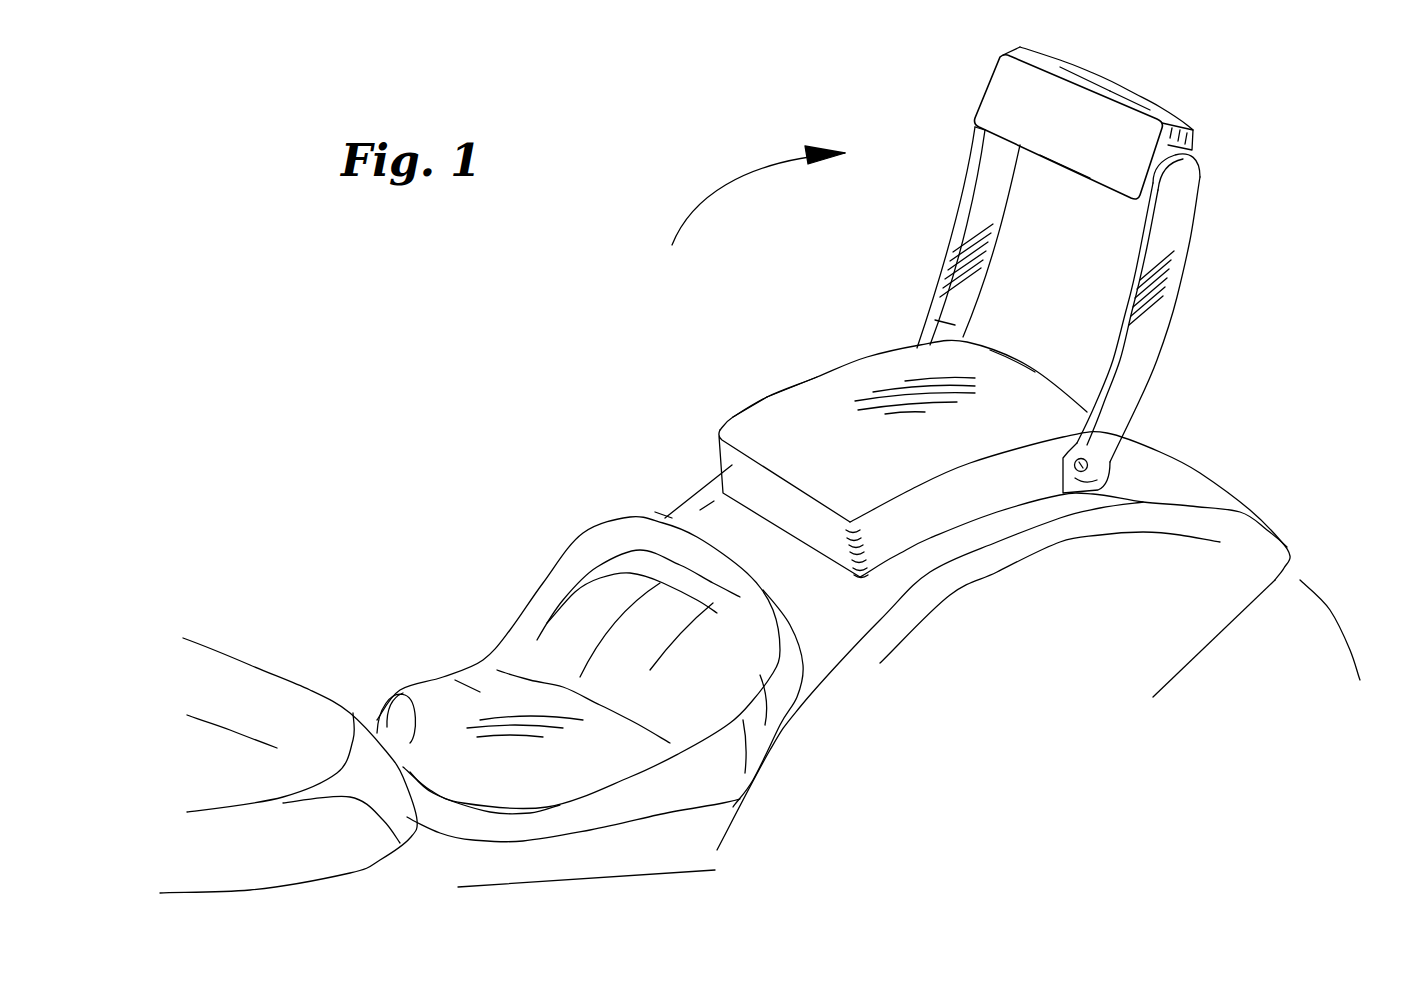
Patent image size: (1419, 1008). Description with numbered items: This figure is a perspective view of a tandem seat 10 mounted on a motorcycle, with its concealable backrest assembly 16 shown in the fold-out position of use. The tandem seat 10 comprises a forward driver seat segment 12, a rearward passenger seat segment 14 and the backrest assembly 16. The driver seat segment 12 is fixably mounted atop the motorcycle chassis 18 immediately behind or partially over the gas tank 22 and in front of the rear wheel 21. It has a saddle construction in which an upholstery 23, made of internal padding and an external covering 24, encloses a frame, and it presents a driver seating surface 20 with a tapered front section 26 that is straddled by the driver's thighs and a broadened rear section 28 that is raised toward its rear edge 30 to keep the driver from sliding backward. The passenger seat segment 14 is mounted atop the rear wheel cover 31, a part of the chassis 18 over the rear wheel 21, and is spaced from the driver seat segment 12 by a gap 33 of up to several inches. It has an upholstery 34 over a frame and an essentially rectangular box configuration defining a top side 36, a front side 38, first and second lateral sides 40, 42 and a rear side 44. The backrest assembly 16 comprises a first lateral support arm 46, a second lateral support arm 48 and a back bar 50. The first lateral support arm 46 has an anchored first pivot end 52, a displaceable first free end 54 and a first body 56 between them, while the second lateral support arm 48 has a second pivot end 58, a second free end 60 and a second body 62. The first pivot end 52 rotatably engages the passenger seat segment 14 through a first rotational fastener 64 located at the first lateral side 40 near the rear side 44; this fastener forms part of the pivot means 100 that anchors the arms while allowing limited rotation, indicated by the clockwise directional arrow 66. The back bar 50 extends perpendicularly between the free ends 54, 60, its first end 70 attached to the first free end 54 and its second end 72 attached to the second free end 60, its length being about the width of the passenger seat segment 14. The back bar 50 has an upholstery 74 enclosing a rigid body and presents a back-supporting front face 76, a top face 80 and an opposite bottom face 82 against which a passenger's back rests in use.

The tandem seat 10 is at (617, 268).
The forward driver seat segment 12 is at (540, 617).
The rearward passenger seat segment 14 is at (843, 392).
The concealable backrest assembly 16 is at (973, 180).
The motorcycle chassis 18 is at (677, 850).
The driver seating surface 20 is at (637, 688).
The rear wheel 21 is at (1300, 605).
The gas tank 22 is at (208, 673).
The upholstery 23 is at (740, 678).
The external covering 24 is at (470, 687).
The tapered front section 26 is at (397, 693).
The broadened rear section 28 is at (570, 567).
The rear edge 30 is at (670, 520).
The rear wheel cover 31 is at (1213, 497).
The gap 33 is at (707, 504).
The upholstery 34 is at (778, 412).
The top side 36 is at (868, 458).
The front side 38 is at (732, 466).
The first lateral side 40 is at (923, 517).
The second lateral side 42 is at (895, 345).
The rear side 44 is at (1033, 367).
The first lateral support arm 46 is at (1147, 342).
The second lateral support arm 48 is at (972, 243).
The back bar 50 is at (1140, 130).
The first pivot end 52 is at (1100, 480).
The first free end 54 is at (1182, 183).
The first body 56 is at (1170, 263).
The second pivot end 58 is at (953, 325).
The second free end 60 is at (977, 147).
The second body 62 is at (990, 218).
The first rotational fastener 64 is at (1090, 467).
The clockwise directional arrow 66 is at (697, 202).
The first end 70 is at (1193, 147).
The second end 72 is at (1003, 60).
The upholstery 74 is at (1090, 78).
The back-supporting front face 76 is at (1077, 137).
The top face 80 is at (1121, 90).
The bottom face 82 is at (1067, 178).
The pivot means 100 is at (1080, 500).